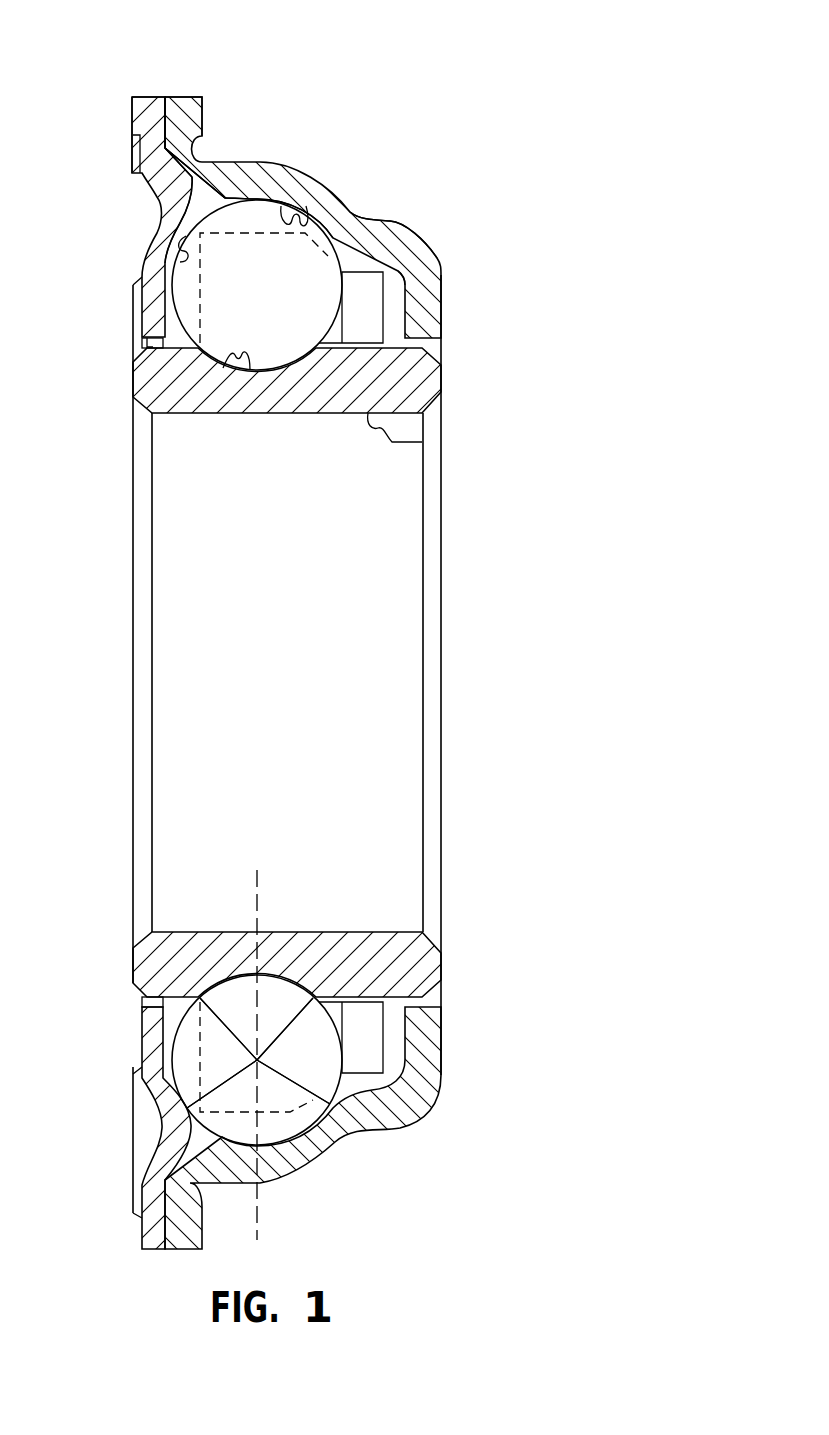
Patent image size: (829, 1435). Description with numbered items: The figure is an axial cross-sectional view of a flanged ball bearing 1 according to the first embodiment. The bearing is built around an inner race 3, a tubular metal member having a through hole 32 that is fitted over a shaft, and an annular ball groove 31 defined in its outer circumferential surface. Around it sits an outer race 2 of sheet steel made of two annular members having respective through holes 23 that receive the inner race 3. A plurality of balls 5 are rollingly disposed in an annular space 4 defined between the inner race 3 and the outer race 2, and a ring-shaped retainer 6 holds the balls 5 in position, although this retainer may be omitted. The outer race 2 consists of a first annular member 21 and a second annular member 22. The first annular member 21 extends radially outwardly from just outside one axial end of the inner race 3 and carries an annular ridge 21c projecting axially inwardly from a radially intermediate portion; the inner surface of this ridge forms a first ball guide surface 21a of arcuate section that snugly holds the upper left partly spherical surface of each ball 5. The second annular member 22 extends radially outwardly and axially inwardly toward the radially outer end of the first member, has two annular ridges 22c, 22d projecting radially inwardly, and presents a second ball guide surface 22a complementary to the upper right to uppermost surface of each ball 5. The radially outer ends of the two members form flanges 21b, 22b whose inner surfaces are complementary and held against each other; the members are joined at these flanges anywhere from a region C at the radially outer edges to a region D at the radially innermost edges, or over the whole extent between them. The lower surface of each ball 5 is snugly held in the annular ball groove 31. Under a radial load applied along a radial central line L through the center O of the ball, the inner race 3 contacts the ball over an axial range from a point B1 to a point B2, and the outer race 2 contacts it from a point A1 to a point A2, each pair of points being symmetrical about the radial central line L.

The flanged ball bearing 1 is at (440, 70).
The outer race 2 is at (142, 85).
The inner race 3 is at (456, 380).
The annular space 4 is at (394, 308).
The balls 5 is at (262, 212).
The ring-shaped retainer 6 is at (371, 281).
The first annular member 21 is at (128, 316).
The first ball guide surface 21a is at (168, 262).
The flange 21b is at (150, 121).
The annular ridge 21c is at (175, 212).
The second annular member 22 is at (450, 262).
The second ball guide surface 22a is at (316, 218).
The flange 22b is at (190, 127).
The annular ridge 22c is at (347, 230).
The annular ridge 22d is at (220, 187).
The through holes 23 is at (150, 345).
The annular ball groove 31 is at (245, 365).
The through hole 32 is at (422, 444).
The region C is at (167, 85).
The region D is at (170, 188).
The radial central line L is at (257, 1039).
The center O is at (258, 1053).
The point A1 is at (177, 1115).
The point A2 is at (340, 1113).
The point B1 is at (217, 1005).
The point B2 is at (294, 1005).